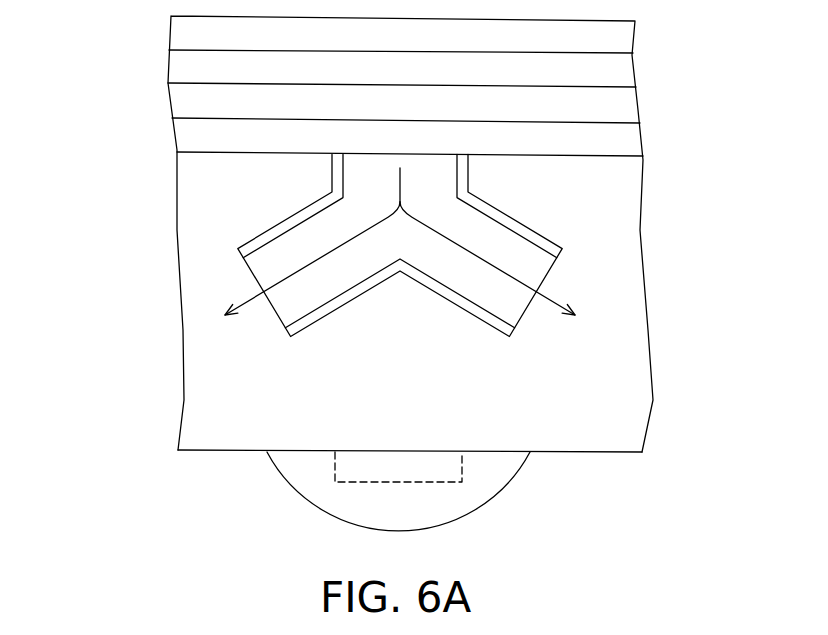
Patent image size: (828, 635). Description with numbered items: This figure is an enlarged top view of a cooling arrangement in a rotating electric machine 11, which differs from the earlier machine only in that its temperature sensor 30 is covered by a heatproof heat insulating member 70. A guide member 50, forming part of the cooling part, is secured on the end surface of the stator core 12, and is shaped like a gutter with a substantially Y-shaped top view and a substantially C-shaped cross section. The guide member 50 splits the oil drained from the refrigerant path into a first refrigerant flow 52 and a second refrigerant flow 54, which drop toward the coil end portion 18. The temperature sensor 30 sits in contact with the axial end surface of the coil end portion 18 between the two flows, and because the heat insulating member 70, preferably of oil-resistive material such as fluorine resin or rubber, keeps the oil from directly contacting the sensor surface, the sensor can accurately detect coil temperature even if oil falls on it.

The rotating electric machine 11 is at (103, 93).
The stator core 12 is at (613, 157).
The coil end portion 18 is at (560, 453).
The temperature sensor 30 is at (443, 482).
The guide member 50 is at (512, 220).
The first refrigerant flow 52 is at (283, 284).
The second refrigerant flow 54 is at (517, 284).
The heat insulating member 70 is at (308, 503).